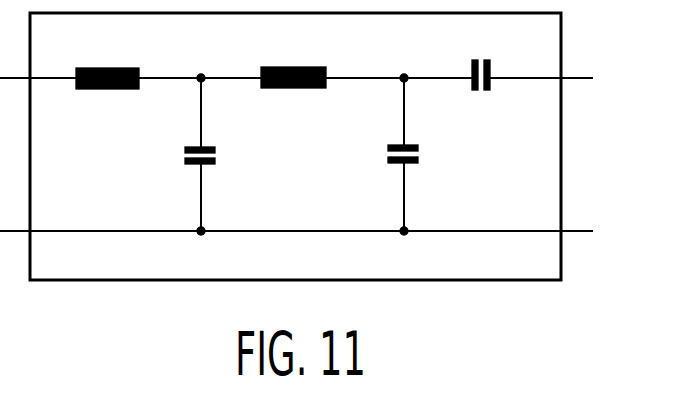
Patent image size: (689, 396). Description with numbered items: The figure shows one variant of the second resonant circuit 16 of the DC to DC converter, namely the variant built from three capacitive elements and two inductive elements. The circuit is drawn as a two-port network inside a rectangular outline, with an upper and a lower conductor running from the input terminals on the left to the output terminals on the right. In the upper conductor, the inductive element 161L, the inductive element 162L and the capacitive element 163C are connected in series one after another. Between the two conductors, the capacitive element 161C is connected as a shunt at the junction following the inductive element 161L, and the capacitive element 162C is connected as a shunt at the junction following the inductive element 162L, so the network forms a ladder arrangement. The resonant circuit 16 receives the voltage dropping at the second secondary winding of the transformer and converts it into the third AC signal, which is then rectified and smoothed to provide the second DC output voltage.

The second resonant circuit 16 is at (563, 158).
The inductive element 161L is at (105, 89).
The inductive element 162L is at (292, 88).
The capacitive element 161C is at (185, 153).
The capacitive element 162C is at (388, 151).
The capacitive element 163C is at (480, 90).